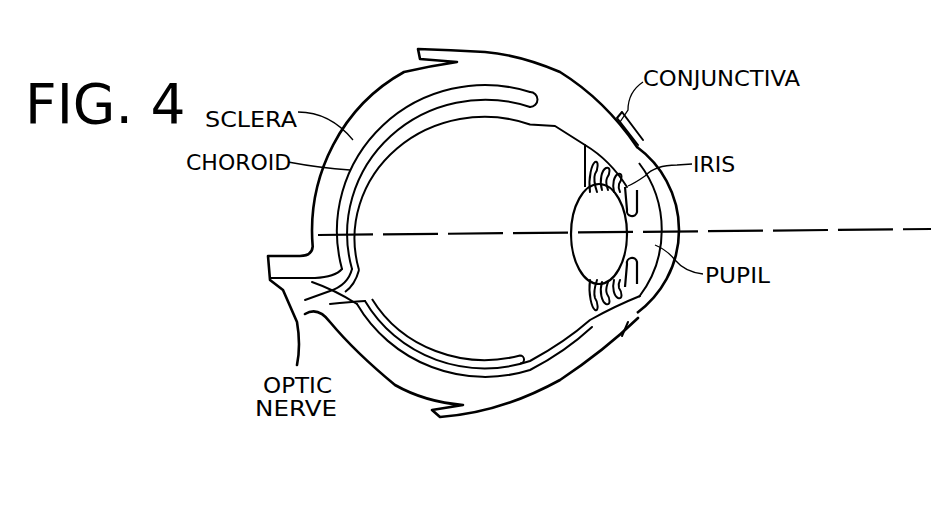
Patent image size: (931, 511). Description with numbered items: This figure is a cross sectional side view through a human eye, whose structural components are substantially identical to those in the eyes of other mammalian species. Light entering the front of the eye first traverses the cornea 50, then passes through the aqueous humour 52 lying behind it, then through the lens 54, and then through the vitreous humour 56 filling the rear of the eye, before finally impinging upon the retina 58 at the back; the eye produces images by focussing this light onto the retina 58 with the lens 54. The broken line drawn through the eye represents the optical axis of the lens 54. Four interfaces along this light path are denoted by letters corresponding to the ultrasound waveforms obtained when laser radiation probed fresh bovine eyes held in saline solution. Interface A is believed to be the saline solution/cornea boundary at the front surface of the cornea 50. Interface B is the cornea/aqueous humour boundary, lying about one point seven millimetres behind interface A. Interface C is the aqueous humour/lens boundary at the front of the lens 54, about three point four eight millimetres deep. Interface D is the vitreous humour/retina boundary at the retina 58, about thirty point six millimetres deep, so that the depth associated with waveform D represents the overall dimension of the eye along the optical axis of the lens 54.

The cornea 50 is at (638, 163).
The aqueous humour 52 is at (650, 262).
The lens 54 is at (574, 205).
The vitreous humour 56 is at (530, 317).
The retina 58 is at (352, 194).
The saline solution/cornea interface A is at (695, 208).
The aqueous humour/cornea interface B is at (682, 240).
The lens/aqueous humour interface C is at (660, 270).
The retina/vitreous humour interface D is at (380, 212).